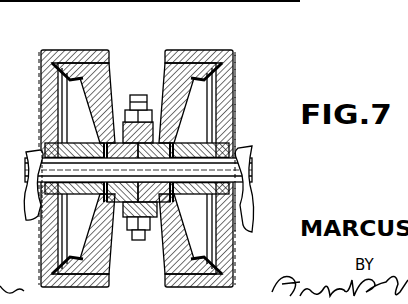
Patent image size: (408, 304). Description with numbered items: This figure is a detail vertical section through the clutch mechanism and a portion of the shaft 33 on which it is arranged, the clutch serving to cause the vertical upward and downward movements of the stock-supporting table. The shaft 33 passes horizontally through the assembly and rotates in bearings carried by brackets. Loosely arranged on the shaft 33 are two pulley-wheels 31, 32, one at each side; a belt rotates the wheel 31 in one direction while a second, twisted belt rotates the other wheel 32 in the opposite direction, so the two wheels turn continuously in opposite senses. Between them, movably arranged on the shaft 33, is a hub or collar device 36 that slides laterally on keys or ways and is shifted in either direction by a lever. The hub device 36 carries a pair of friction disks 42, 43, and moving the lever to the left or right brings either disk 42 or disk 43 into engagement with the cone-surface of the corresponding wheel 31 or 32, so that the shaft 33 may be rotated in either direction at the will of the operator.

The pulley-wheel 31 is at (61, 50).
The pulley-wheel 32 is at (212, 50).
The shaft 33 is at (240, 164).
The hub or collar device 36 is at (155, 232).
The friction disk 42 is at (83, 168).
The friction disk 43 is at (190, 168).